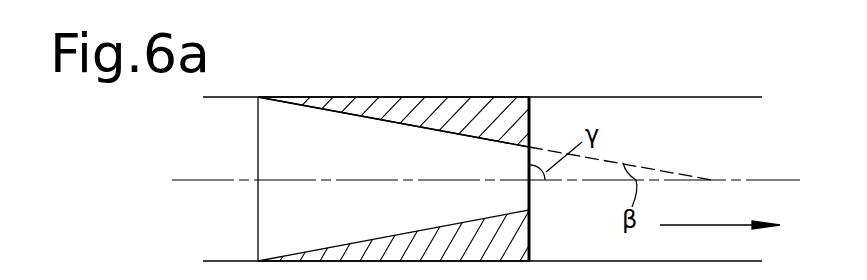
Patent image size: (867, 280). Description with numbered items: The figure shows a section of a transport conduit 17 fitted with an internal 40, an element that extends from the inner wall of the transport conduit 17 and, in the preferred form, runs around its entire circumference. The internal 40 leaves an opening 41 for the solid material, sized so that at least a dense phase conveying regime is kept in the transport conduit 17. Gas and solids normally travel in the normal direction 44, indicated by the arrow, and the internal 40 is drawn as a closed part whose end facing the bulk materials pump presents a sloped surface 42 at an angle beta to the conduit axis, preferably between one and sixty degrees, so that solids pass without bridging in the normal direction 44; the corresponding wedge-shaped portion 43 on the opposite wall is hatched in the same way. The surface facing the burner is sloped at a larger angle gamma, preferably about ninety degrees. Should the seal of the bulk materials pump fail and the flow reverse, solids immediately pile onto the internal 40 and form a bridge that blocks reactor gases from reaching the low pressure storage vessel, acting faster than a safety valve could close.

The transport conduit 17 is at (640, 96).
The internal 40 is at (488, 112).
The opening 41 is at (532, 197).
The inclined surface of wedge 42 is at (417, 125).
The lower wedge-shaped insert 43 is at (531, 245).
The normal direction 44 is at (705, 225).